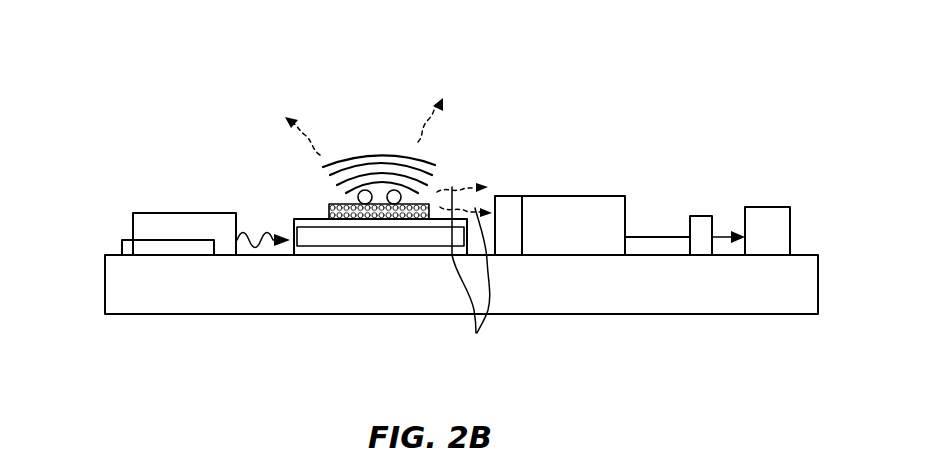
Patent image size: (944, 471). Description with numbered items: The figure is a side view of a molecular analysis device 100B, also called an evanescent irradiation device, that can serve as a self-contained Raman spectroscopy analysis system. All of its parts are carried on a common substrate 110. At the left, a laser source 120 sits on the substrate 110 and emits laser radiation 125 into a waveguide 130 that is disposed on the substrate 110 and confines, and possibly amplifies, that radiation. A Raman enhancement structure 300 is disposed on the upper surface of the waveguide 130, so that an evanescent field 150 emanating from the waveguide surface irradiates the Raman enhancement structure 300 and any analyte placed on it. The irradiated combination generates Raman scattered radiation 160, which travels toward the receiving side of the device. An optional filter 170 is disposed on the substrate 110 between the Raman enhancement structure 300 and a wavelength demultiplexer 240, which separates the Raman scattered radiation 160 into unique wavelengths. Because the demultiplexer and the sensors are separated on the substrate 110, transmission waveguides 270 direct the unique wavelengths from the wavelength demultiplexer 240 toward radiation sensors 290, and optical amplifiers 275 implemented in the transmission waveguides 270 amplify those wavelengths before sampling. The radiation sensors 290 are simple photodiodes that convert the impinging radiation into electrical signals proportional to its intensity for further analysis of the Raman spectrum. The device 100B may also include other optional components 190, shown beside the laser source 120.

The molecular analysis device 100B is at (204, 68).
The substrate 110 is at (188, 314).
The laser source 120 is at (133, 213).
The laser radiation 125 is at (261, 239).
The waveguide 130 is at (332, 255).
The evanescent field 150 is at (348, 160).
The Raman scattered radiation 160 is at (476, 333).
The filter 170 is at (505, 196).
The other optional components 190 is at (122, 245).
The wavelength demultiplexer 240 is at (572, 196).
The transmission waveguides 270 is at (643, 237).
The optical amplifiers 275 is at (705, 216).
The radiation sensors 290 is at (790, 212).
The Raman enhancement structure 300 is at (432, 204).